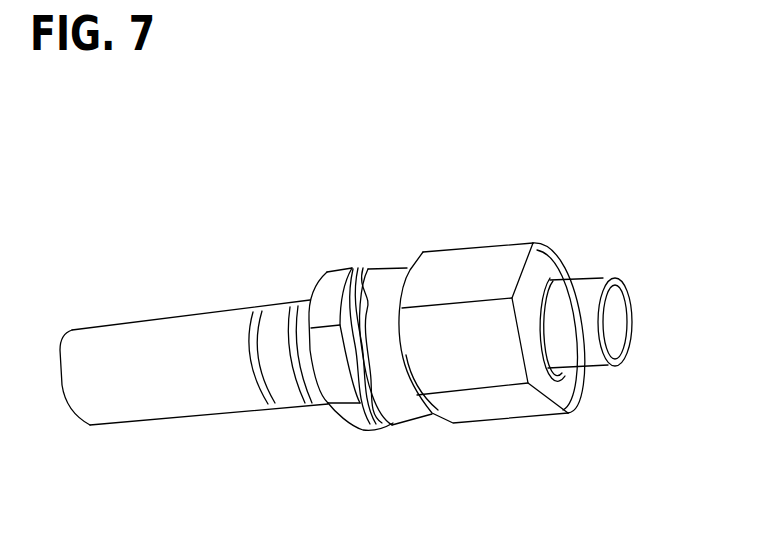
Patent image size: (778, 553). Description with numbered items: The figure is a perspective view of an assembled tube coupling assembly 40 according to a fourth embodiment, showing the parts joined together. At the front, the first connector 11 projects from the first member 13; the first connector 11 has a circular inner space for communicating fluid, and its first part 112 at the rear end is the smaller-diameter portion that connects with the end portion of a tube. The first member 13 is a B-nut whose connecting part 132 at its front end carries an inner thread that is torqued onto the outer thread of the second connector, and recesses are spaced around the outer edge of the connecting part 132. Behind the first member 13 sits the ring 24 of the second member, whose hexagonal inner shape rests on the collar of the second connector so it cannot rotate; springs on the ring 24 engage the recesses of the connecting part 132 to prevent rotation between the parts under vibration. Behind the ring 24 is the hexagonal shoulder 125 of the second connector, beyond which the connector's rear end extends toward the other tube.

The tube coupling assembly 40 is at (150, 235).
The shoulder 125 is at (325, 288).
The ring 24 is at (350, 278).
The connecting part 132 is at (403, 403).
The first member 13 is at (460, 268).
The first connector 11 is at (537, 317).
The first part 112 is at (580, 352).